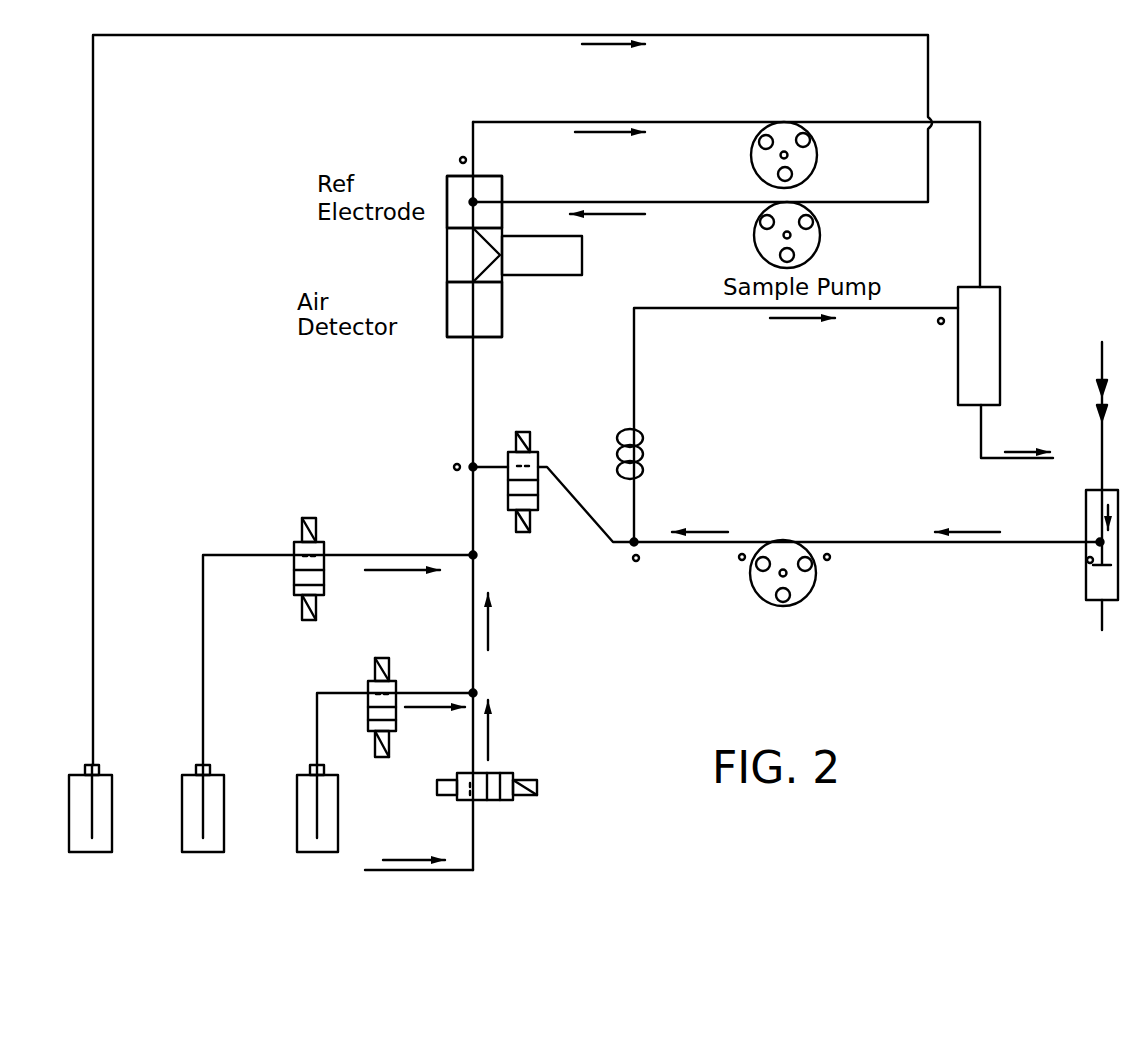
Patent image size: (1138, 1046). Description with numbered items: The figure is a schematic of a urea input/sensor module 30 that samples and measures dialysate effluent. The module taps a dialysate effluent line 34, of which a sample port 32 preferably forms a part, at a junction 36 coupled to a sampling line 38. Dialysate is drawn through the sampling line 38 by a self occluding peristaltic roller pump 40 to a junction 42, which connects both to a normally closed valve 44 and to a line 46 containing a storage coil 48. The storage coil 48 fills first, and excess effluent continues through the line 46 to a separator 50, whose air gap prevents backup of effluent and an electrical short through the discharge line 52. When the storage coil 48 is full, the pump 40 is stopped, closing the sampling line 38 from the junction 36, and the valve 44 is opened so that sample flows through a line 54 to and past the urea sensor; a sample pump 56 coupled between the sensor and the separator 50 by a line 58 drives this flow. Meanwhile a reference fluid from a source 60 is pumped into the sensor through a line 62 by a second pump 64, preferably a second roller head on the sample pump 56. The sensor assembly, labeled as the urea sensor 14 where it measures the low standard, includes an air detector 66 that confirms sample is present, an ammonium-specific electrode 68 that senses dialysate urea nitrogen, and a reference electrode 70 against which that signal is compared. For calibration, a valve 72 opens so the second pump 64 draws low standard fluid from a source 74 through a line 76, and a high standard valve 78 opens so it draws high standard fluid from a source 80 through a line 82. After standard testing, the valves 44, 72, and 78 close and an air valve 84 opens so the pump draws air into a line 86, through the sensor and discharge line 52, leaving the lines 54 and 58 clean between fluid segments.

The urea sensor 14 is at (438, 255).
The urea input/sensor module 30 is at (640, 655).
The sample port 32 is at (1076, 593).
The dialysate effluent line 34 is at (1103, 455).
The junction 36 is at (1088, 549).
The sampling line 38 is at (908, 545).
The roller pump 40 is at (812, 593).
The junction 42 is at (636, 548).
The normally closed valve 44 is at (538, 512).
The line 46 is at (713, 310).
The storage coil 48 is at (650, 447).
The separator 50 is at (978, 287).
The discharge line 52 is at (1017, 466).
The line 54 is at (478, 372).
The sample pump 56 is at (810, 135).
The line 58 is at (707, 121).
The reference fluid source 60 is at (112, 775).
The line 62 is at (205, 36).
The second pump 64 is at (818, 238).
The air detector 66 is at (455, 330).
The electrode 68 is at (583, 258).
The reference electrode 70 is at (447, 176).
The valve 72 is at (323, 542).
The low standard source 74 is at (224, 775).
The line 76 is at (252, 553).
The high standard valve 78 is at (397, 683).
The high standard source 80 is at (338, 775).
The line 82 is at (343, 692).
The air valve 84 is at (507, 802).
The line 86 is at (417, 872).